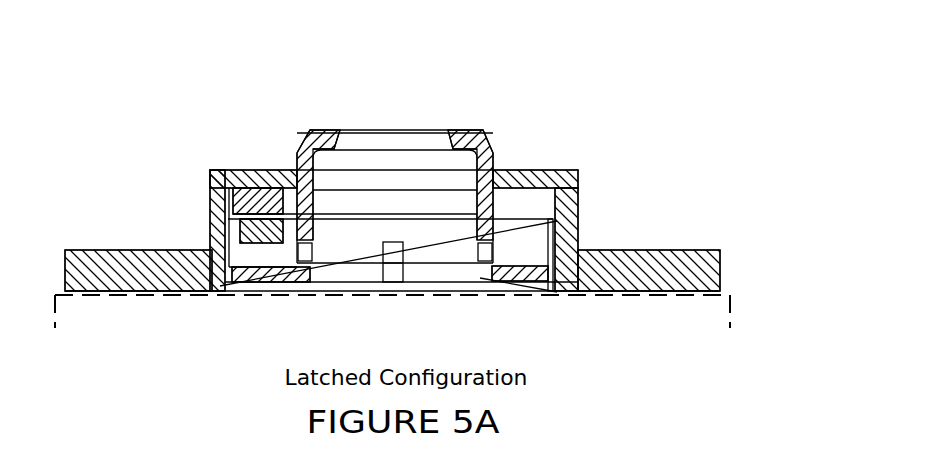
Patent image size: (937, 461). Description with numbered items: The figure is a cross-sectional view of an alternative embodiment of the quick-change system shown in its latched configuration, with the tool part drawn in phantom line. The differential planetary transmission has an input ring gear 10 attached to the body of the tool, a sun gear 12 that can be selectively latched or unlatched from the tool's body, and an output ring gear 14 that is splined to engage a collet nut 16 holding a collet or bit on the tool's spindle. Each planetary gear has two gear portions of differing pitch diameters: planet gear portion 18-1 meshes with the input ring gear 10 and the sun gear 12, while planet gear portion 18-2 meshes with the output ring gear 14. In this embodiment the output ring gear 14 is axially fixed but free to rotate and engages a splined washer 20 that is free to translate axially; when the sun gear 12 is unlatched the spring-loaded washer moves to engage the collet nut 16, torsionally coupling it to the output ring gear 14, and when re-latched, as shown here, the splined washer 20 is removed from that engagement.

The input ring gear 10 is at (392, 341).
The sun gear 12 is at (441, 206).
The output ring gear 14 is at (630, 174).
The collet nut 16 is at (477, 139).
The planet gear portion 18-1 is at (175, 141).
The planet gear portion 18-2 is at (280, 204).
The splined washer 20 is at (456, 293).